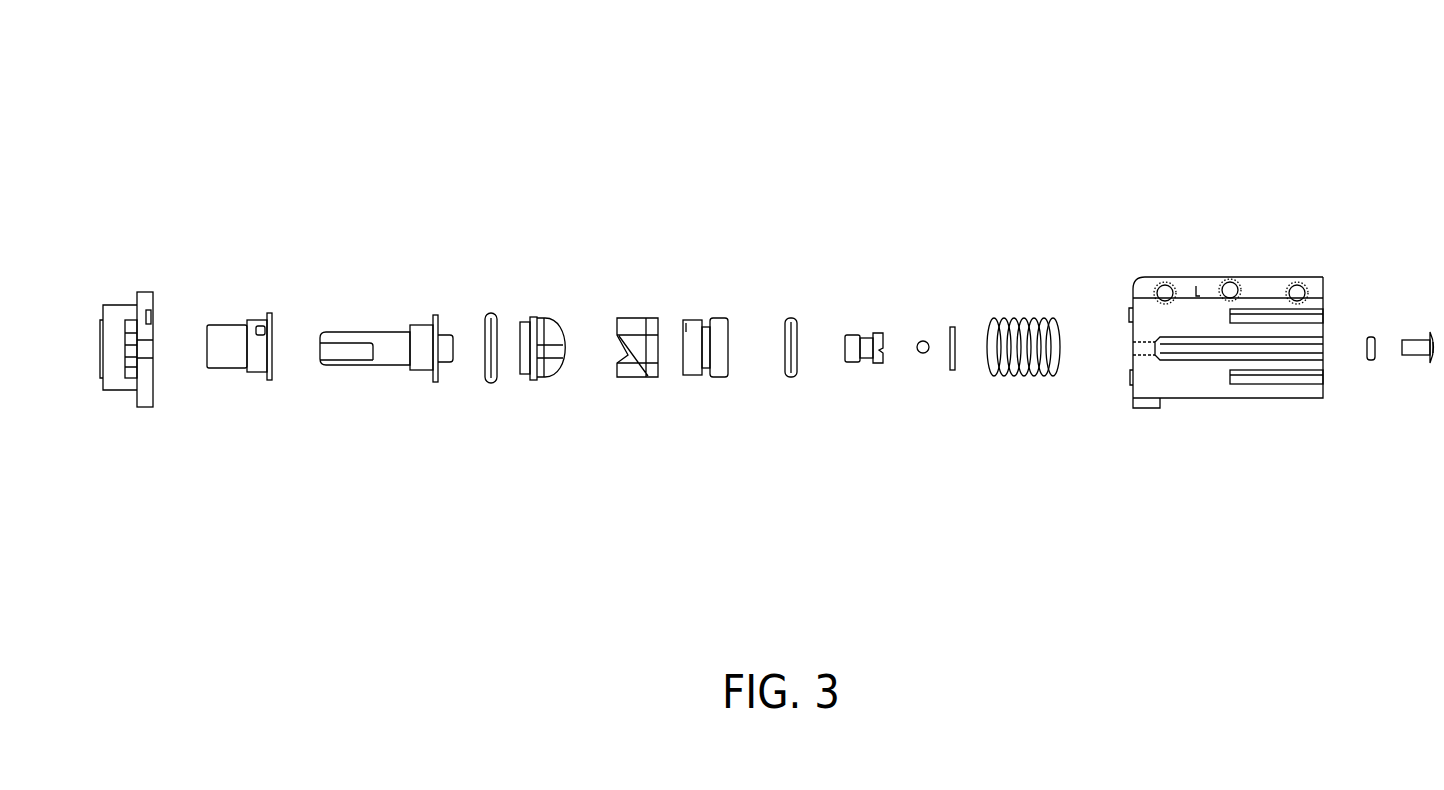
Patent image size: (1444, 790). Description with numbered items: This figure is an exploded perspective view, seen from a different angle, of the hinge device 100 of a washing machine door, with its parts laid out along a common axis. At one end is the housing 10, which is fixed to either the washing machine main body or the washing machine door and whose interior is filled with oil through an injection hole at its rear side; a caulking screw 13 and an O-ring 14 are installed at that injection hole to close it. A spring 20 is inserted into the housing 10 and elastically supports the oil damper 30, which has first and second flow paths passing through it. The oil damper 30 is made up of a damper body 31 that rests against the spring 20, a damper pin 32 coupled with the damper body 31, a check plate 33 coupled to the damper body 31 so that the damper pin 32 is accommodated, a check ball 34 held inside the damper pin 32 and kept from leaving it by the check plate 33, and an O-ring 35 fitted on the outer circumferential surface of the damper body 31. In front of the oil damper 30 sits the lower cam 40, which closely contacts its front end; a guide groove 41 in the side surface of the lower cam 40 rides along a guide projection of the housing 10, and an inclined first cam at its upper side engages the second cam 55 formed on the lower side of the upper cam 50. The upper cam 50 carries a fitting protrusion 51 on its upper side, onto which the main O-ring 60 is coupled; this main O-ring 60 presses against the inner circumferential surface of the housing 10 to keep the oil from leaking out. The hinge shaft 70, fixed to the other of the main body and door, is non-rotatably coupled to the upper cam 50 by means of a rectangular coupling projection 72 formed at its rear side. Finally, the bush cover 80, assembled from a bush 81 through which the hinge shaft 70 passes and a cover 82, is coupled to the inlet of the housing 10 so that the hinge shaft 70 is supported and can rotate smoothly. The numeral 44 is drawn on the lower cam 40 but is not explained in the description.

The hinge device 100 is at (940, 131).
The housing 10 is at (1226, 262).
The caulking screw 13 is at (1416, 358).
The O-ring 14 is at (1371, 362).
The spring 20 is at (1028, 298).
The oil damper 30 is at (963, 234).
The damper body 31 is at (720, 318).
The damper pin 32 is at (862, 333).
The check plate 33 is at (952, 327).
The check ball 34 is at (921, 341).
The O-ring 35 is at (790, 318).
The lower cam 40 is at (635, 300).
The guide groove 41 is at (647, 367).
The cam groove 44 is at (622, 357).
The upper cam 50 is at (540, 300).
The fitting protrusion 51 is at (533, 385).
The second cam 55 is at (566, 330).
The main O-ring 60 is at (492, 300).
The hinge shaft 70 is at (389, 300).
The rectangular coupling projection 72 is at (445, 357).
The bush cover 80 is at (240, 225).
The bush 81 is at (225, 325).
The cover 82 is at (148, 292).